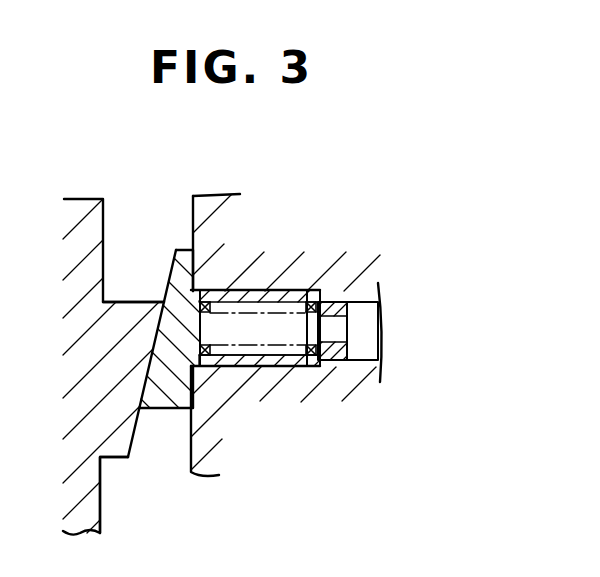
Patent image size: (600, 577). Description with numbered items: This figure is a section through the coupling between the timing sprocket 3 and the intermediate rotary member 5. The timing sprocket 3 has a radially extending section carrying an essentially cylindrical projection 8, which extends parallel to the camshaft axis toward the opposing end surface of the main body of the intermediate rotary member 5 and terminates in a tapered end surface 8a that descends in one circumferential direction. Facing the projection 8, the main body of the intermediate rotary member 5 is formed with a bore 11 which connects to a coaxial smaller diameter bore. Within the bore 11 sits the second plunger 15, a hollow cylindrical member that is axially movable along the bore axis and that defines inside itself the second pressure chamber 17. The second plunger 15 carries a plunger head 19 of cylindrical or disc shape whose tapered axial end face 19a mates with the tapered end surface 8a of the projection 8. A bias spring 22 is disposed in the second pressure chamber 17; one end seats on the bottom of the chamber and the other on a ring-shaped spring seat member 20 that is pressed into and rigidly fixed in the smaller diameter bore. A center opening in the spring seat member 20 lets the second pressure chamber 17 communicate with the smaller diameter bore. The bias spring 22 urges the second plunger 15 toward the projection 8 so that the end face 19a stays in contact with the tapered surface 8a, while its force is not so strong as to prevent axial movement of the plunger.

The timing sprocket 3 is at (84, 208).
The intermediate rotary member 5 is at (206, 197).
The projection 8 is at (127, 312).
The tapered end surface 8a is at (139, 462).
The bore 11 is at (274, 366).
The second plunger 15 is at (252, 288).
The second pressure chamber 17 is at (289, 328).
The plunger head 19 is at (137, 424).
The tapered axial end face 19a is at (170, 265).
The spring seat member 20 is at (337, 299).
The bias spring 22 is at (210, 355).